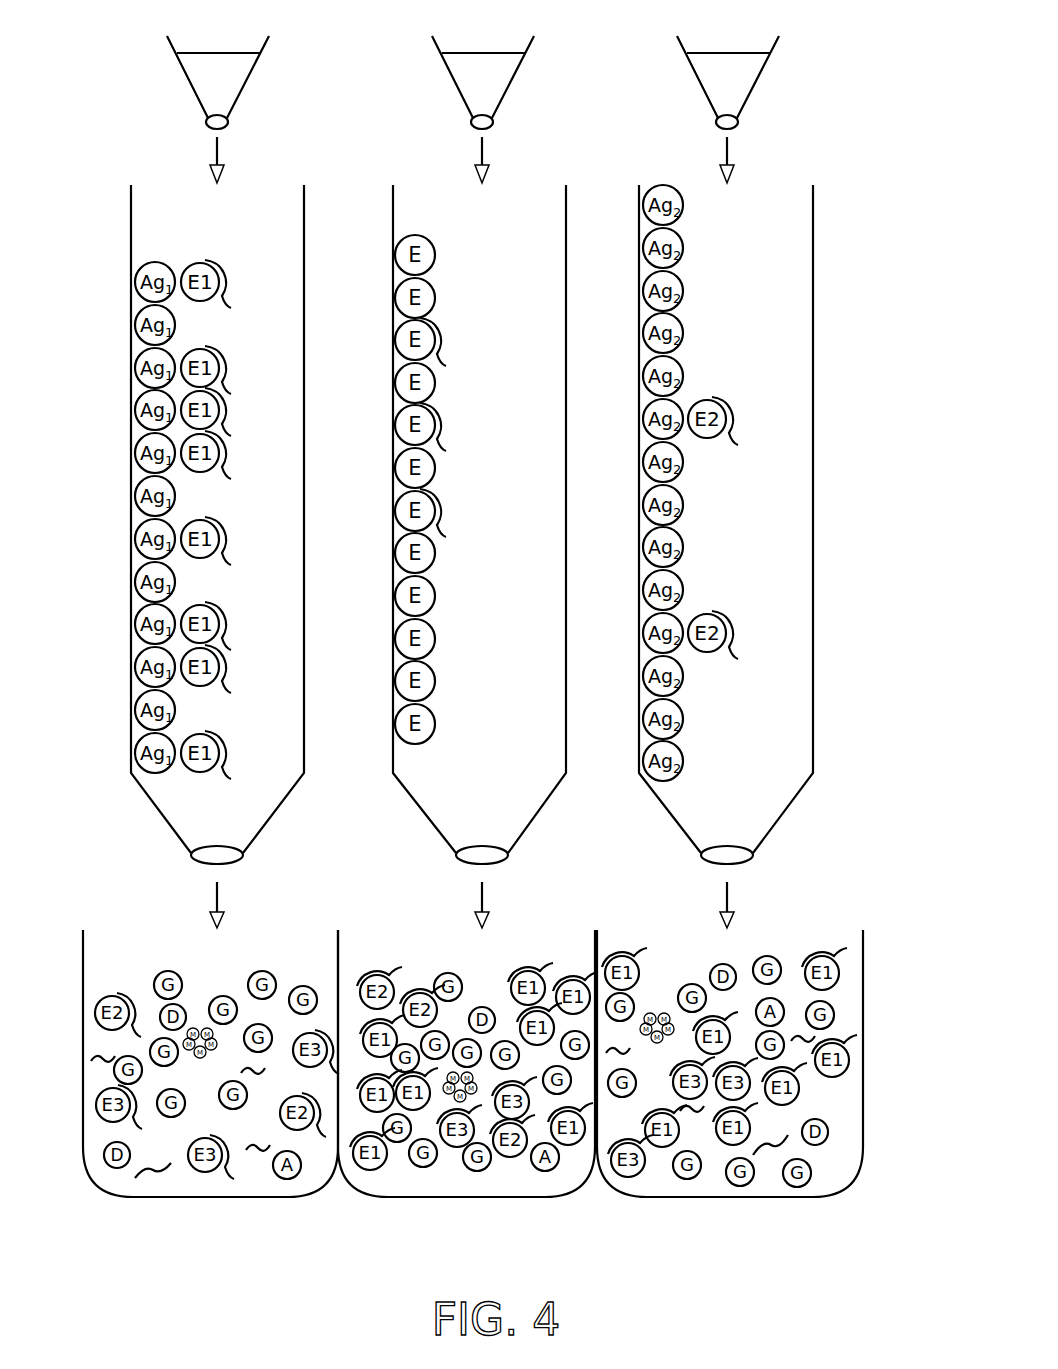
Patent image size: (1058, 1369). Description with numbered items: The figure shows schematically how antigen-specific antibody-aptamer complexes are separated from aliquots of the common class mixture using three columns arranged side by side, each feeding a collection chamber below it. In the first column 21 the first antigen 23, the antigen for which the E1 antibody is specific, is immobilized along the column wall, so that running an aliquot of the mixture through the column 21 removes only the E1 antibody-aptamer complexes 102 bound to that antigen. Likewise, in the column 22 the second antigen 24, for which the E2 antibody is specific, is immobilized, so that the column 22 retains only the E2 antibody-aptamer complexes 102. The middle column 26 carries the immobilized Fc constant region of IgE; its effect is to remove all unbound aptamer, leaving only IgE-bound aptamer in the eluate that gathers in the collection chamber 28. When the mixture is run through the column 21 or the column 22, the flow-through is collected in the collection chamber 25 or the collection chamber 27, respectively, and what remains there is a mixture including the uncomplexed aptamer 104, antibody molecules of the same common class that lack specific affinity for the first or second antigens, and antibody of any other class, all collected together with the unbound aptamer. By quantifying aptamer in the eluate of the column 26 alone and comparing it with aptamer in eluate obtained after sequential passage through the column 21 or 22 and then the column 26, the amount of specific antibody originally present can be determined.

The column 21 is at (304, 500).
The column 26 is at (566, 352).
The column 22 is at (813, 352).
The first antigen 23 is at (131, 648).
The second antigen 24 is at (643, 698).
The bound antibody 102 is at (222, 432).
The collection chamber 25 is at (83, 1097).
The collection chamber 28 is at (498, 1197).
The collection chamber 27 is at (863, 1012).
The uncomplexed aptamer 104 is at (153, 1172).